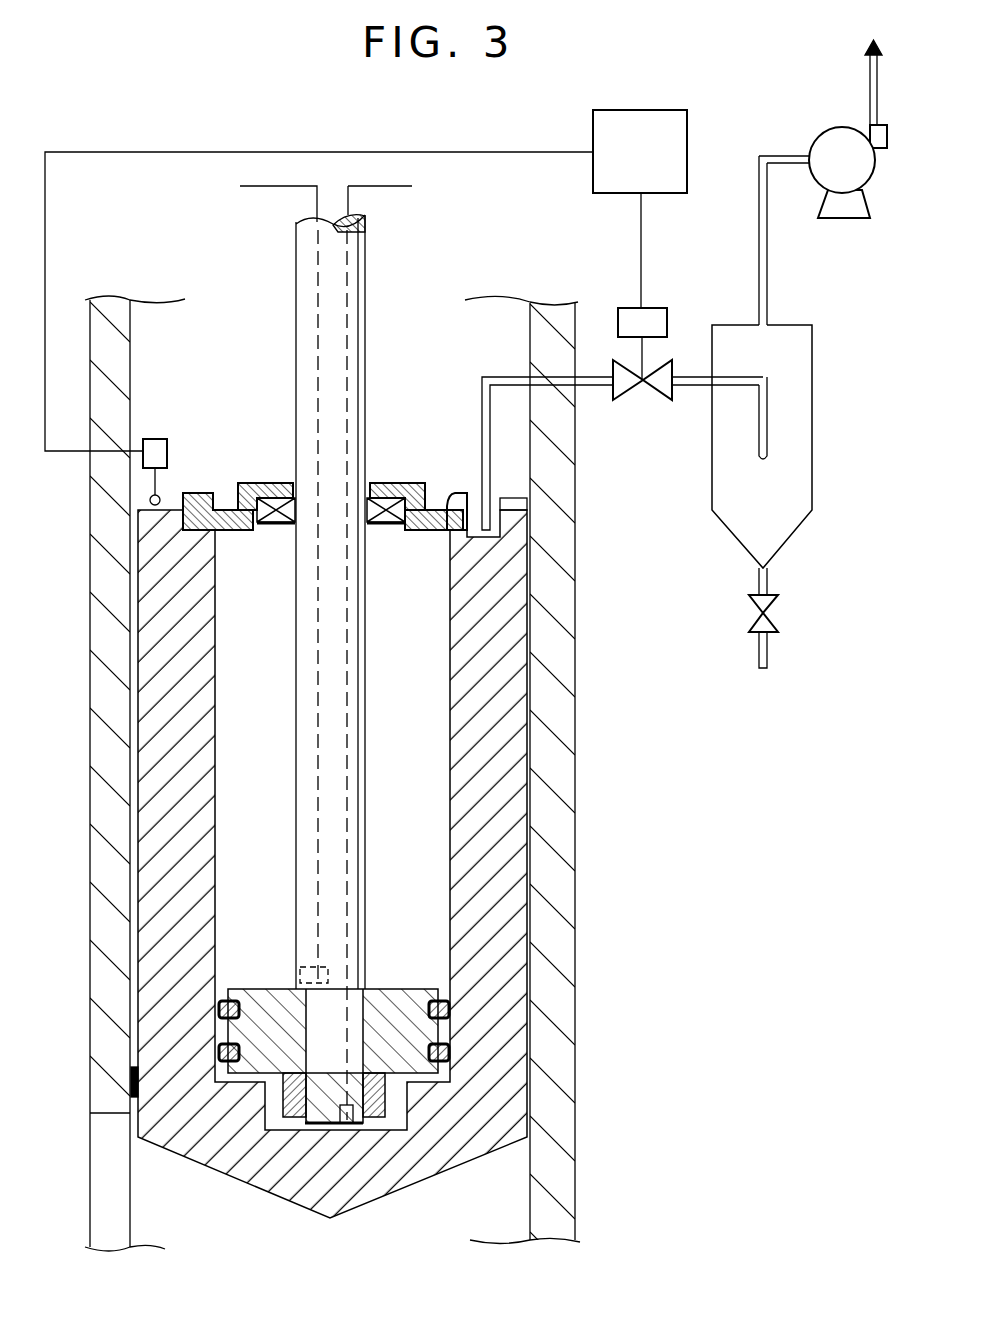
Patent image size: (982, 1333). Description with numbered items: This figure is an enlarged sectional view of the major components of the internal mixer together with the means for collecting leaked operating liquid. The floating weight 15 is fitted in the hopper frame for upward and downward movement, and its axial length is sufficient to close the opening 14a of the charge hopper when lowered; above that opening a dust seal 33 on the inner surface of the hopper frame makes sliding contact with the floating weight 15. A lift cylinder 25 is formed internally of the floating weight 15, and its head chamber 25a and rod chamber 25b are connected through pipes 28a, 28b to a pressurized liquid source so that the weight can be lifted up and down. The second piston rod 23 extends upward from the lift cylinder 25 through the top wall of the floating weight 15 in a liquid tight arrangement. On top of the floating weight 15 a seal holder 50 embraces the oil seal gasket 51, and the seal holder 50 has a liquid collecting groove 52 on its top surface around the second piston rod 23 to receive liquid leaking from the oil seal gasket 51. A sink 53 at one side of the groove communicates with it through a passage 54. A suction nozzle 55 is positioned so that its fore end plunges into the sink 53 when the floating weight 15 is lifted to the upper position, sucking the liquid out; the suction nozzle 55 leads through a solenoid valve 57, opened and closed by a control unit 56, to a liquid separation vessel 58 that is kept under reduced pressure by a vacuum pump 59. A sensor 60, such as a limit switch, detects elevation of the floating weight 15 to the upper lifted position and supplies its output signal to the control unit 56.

The opening 14a is at (117, 1115).
The floating weight 15 is at (518, 793).
The second piston rod 23 is at (298, 340).
The lift cylinder 25 is at (214, 761).
The head chamber 25a is at (277, 1125).
The rod chamber 25b is at (230, 662).
The pipe 28a is at (397, 187).
The pipe 28b is at (257, 190).
The dust seal 33 is at (131, 1087).
The seal holder 50 is at (272, 484).
The oil seal gasket 51 is at (273, 523).
The liquid collecting groove 52 is at (223, 497).
The sink 53 is at (497, 523).
The passage 54 is at (452, 507).
The suction nozzle 55 is at (480, 408).
The control unit 56 is at (657, 115).
The solenoid valve 57 is at (653, 383).
The liquid separation vessel 58 is at (803, 512).
The vacuum pump 59 is at (837, 128).
The sensor 60 is at (153, 440).